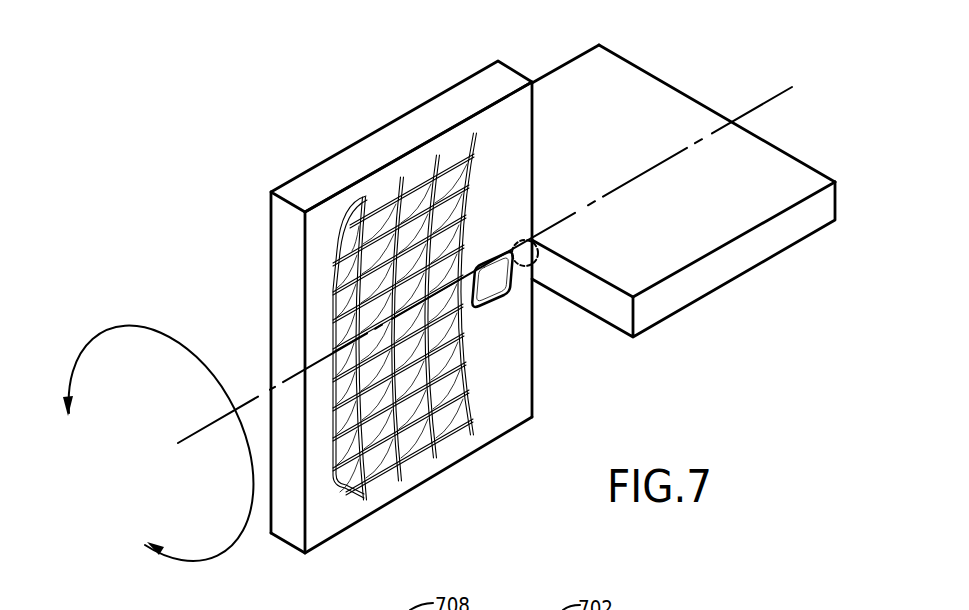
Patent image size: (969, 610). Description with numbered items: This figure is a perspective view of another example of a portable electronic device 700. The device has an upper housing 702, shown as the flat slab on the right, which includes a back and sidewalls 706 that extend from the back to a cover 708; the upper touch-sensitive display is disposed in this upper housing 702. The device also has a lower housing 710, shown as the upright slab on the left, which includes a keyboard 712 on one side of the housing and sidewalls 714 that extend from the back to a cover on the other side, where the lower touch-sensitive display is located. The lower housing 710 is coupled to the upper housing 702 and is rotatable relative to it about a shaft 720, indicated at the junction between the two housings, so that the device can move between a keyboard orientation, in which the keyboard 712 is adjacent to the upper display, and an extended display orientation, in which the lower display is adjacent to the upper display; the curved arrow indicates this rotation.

The portable electronic device 700 is at (300, 134).
The upper housing 702 is at (677, 88).
The sidewalls 706 is at (713, 277).
The cover 708 is at (622, 67).
The lower housing 710 is at (285, 542).
The keyboard 712 is at (414, 460).
The sidewalls 714 is at (288, 247).
The shaft 720 is at (535, 258).